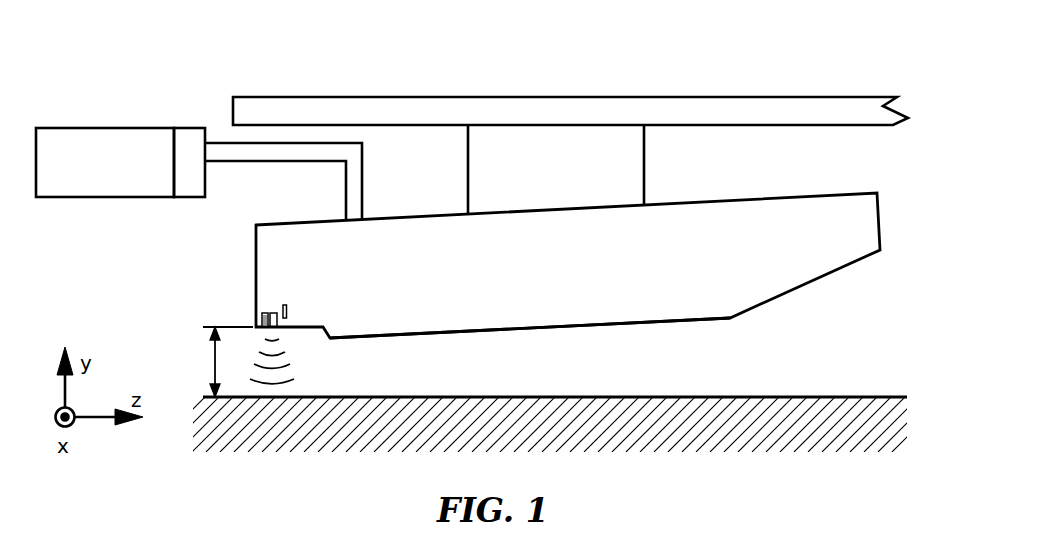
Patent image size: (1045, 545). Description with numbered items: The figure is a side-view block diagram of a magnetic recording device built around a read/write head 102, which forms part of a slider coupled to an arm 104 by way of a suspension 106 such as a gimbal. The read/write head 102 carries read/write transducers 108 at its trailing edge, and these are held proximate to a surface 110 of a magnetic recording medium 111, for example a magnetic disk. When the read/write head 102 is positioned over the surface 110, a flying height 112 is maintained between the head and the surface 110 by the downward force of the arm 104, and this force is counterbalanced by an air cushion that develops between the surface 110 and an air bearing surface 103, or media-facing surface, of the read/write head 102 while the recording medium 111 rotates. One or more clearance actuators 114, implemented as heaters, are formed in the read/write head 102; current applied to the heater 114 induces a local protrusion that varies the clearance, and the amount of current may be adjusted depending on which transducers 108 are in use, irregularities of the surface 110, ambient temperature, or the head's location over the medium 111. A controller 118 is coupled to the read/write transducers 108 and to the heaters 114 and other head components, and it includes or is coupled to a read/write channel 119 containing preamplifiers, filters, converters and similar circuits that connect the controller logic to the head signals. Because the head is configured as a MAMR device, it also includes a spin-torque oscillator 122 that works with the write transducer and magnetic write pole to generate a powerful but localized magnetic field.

The read/write head 102 is at (773, 205).
The air bearing surface 103 is at (425, 337).
The arm 104 is at (825, 103).
The suspension 106 is at (644, 160).
The read/write transducers 108 is at (265, 313).
The surface 110 is at (777, 397).
The magnetic recording medium 111 is at (792, 440).
The flying height 112 is at (210, 362).
The clearance actuator 114 is at (284, 305).
The controller 118 is at (100, 128).
The read/write channel 119 is at (182, 128).
The spin-torque oscillator 122 is at (268, 316).